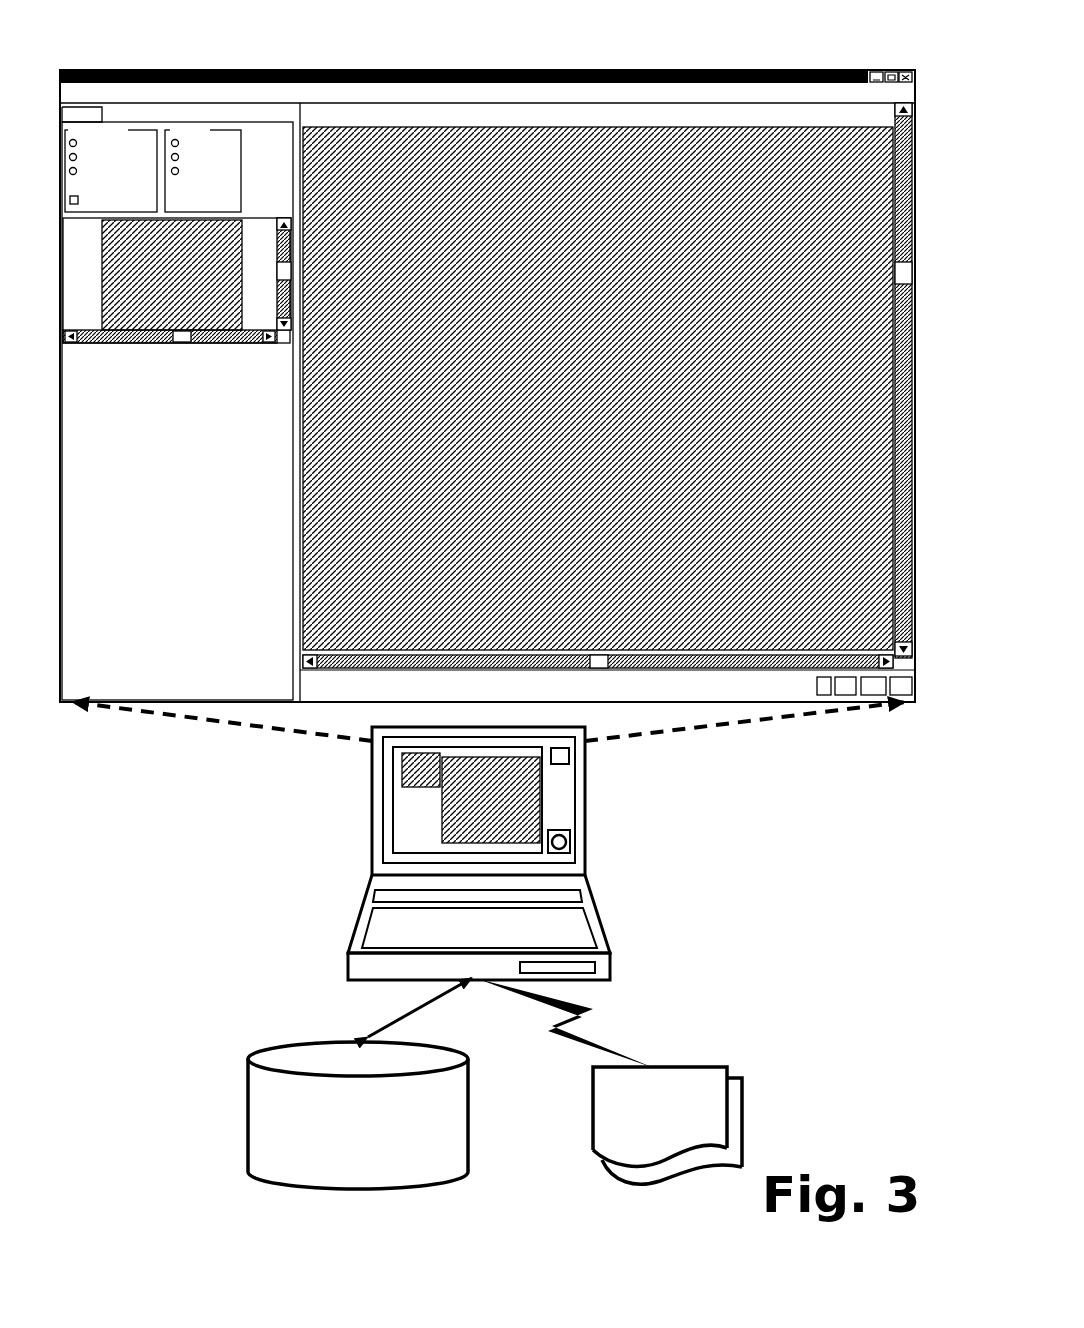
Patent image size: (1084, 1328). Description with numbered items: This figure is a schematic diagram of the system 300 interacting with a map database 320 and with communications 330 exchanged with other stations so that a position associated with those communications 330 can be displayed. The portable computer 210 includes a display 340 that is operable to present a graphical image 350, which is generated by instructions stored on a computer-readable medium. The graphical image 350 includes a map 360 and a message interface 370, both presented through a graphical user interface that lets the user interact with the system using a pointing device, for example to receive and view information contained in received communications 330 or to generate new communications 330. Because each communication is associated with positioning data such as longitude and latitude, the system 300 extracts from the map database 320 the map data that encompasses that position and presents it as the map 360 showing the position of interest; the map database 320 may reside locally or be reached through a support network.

The system 300 is at (205, 866).
The portable computer 210 is at (461, 853).
The map database 320 is at (249, 1078).
The communications 330 is at (743, 1092).
The display 340 is at (538, 822).
The graphical image 350 is at (868, 637).
The map 360 is at (742, 128).
The message interface 370 is at (150, 102).